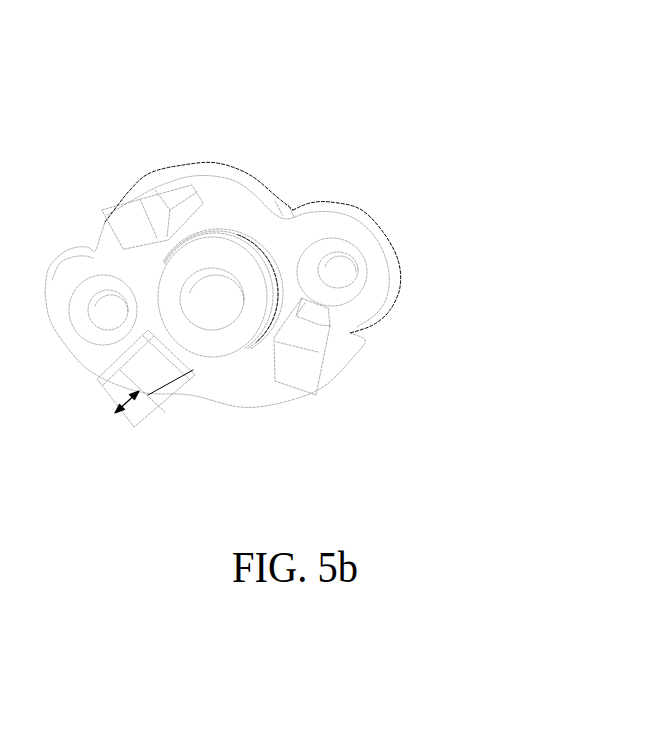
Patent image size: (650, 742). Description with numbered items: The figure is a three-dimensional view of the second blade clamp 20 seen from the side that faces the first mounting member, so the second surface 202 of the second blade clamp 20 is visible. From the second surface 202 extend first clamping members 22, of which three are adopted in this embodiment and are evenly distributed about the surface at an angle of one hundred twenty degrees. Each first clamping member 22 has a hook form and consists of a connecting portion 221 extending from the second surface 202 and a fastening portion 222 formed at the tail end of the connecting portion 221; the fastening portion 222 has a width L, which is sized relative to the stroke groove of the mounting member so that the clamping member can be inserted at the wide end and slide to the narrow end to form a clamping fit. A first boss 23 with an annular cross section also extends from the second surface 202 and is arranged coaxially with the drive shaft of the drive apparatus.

The second blade clamp 20 is at (373, 36).
The second surface 202 is at (247, 227).
The first boss 23 is at (223, 333).
The first clamping member 22 is at (395, 389).
The connecting portion 221 is at (296, 323).
The fastening portion 222 is at (293, 370).
The width of the fastening portion L is at (125, 413).